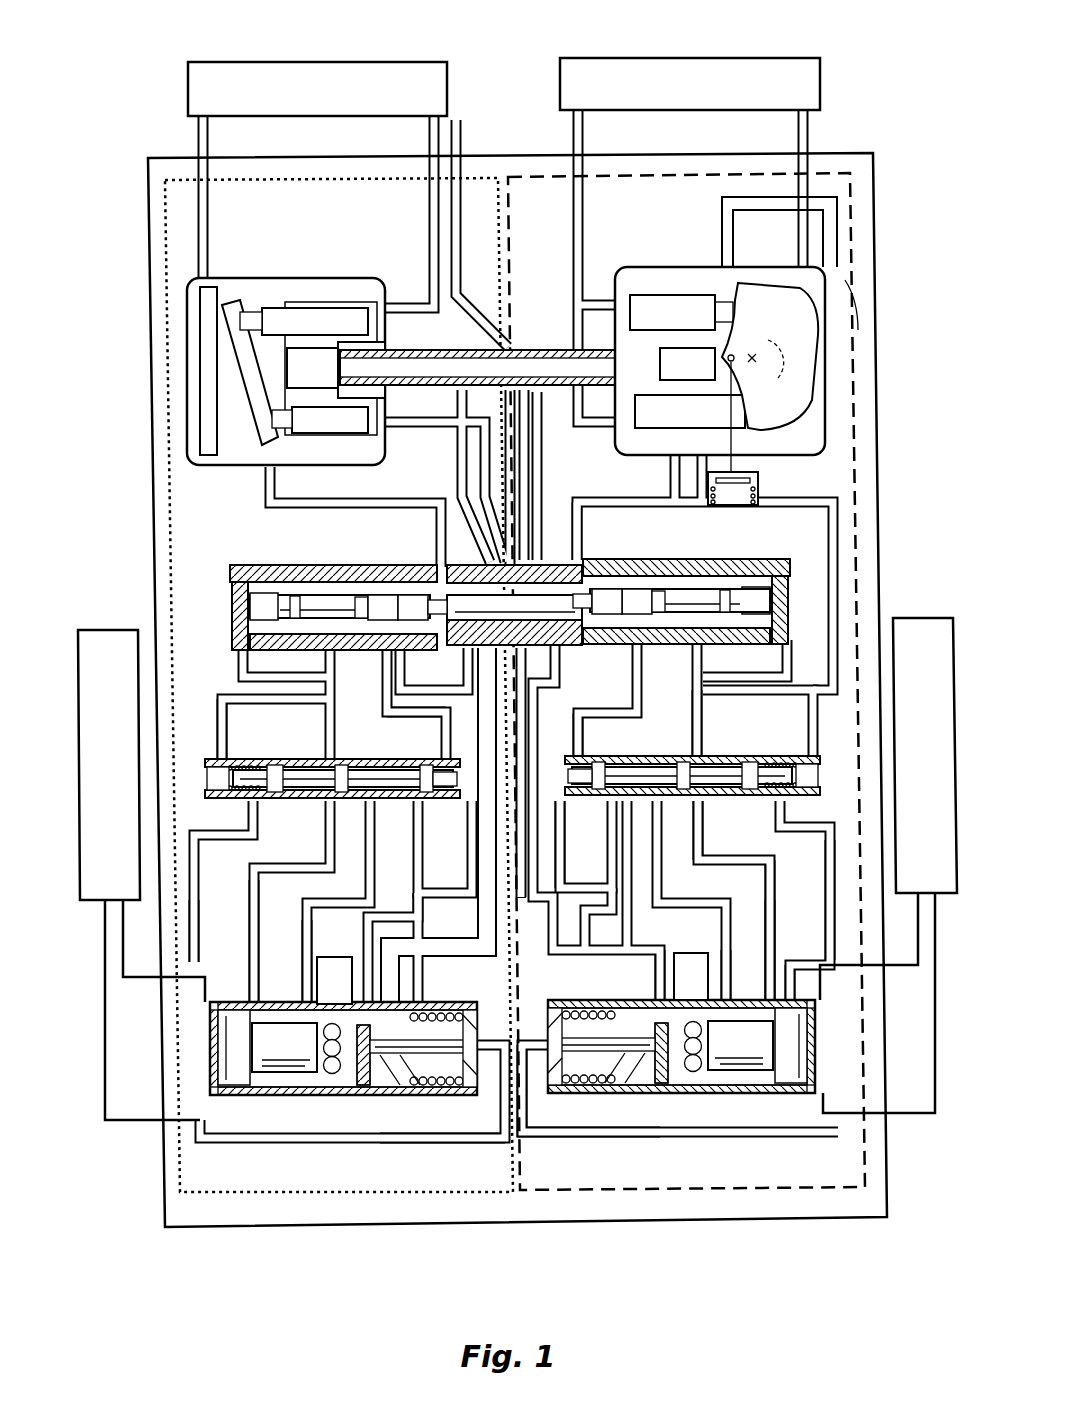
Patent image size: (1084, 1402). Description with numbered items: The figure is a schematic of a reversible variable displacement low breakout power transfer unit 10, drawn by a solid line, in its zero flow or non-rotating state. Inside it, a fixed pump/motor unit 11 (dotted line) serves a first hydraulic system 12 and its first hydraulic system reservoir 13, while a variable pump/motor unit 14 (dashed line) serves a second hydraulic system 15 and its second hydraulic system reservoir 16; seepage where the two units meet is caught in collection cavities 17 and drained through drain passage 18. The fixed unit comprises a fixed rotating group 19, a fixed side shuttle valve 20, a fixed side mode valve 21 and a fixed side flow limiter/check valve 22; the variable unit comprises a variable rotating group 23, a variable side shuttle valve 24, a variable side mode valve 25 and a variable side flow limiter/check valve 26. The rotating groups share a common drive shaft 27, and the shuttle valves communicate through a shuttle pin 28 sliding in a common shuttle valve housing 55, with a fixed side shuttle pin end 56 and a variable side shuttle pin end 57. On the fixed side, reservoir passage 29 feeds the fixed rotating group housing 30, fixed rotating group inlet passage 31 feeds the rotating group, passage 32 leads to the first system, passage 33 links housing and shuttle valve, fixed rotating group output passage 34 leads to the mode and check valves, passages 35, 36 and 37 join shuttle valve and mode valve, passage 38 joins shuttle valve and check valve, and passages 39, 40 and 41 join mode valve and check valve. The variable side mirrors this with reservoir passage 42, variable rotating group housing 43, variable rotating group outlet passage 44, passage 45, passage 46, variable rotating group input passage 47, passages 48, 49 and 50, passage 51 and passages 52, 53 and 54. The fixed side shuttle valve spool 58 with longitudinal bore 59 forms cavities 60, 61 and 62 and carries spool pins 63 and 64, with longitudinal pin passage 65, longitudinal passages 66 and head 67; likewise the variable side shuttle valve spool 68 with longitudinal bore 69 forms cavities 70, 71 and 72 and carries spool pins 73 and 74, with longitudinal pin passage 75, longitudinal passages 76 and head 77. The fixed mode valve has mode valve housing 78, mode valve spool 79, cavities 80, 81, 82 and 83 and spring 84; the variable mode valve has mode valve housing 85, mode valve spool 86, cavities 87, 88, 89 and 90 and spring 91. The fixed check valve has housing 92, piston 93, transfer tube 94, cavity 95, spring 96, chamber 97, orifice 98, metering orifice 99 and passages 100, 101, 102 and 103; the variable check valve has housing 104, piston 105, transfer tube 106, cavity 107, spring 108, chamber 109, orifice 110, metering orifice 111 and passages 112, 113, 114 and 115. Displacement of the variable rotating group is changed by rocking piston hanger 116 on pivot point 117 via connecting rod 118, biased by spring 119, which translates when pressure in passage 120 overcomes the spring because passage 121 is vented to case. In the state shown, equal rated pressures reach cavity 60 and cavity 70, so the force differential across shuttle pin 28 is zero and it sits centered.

The low breakout power transfer unit 10 is at (150, 266).
The fixed pump/motor unit 11 is at (165, 347).
The first hydraulic system 12 is at (102, 928).
The first hydraulic system reservoir 13 is at (288, 62).
The variable pump/motor unit 14 is at (858, 306).
The second hydraulic system 15 is at (905, 617).
The second hydraulic system reservoir 16 is at (690, 64).
The collection cavities 17 is at (533, 388).
The drain passage 18 is at (462, 128).
The fixed rotating group 19 is at (300, 274).
The fixed side shuttle valve 20 is at (230, 590).
The fixed side mode valve 21 is at (205, 774).
The fixed side flow limiter/check valve 22 is at (230, 1006).
The variable rotating group 23 is at (628, 284).
The variable side shuttle valve 24 is at (778, 615).
The variable side mode valve 25 is at (820, 757).
The variable side flow limiter/check valve 26 is at (832, 965).
The common drive shaft 27 is at (437, 398).
The shuttle pin 28 is at (470, 578).
The reservoir passage 29 is at (207, 130).
The fixed rotating group housing 30 is at (265, 286).
The fixed rotating group inlet passage 31 is at (427, 130).
The passage 32 is at (140, 1125).
The passage 33 is at (266, 487).
The fixed rotating group output passage 34 is at (457, 465).
The passage 35 is at (217, 695).
The passage 36 is at (322, 704).
The passage 37 is at (440, 722).
The passage 38 is at (480, 905).
The passage 39 is at (200, 855).
The passage 40 is at (290, 880).
The passage 41 is at (373, 830).
The reservoir passage 42 is at (797, 130).
The variable rotating group housing 43 is at (760, 268).
The variable rotating group outlet passage 44 is at (585, 130).
The passage 45 is at (910, 1120).
The passage 46 is at (655, 495).
The variable rotating group input passage 47 is at (532, 465).
The passage 48 is at (818, 720).
The passage 49 is at (703, 710).
The passage 50 is at (590, 735).
The passage 51 is at (526, 905).
The passage 52 is at (838, 850).
The passage 53 is at (785, 845).
The passage 54 is at (715, 878).
The common shuttle valve housing 55 is at (540, 643).
The fixed side shuttle pin end 56 is at (437, 598).
The variable side shuttle pin end 57 is at (518, 560).
The fixed side shuttle valve spool 58 is at (285, 598).
The longitudinal bore 59 is at (358, 597).
The cavity 60 is at (240, 645).
The cavity 61 is at (298, 596).
The cavity 62 is at (395, 648).
The spool pin 63 is at (230, 572).
The spool pin 64 is at (455, 645).
The longitudinal pin passage 65 is at (375, 595).
The longitudinal passages 66 is at (253, 594).
The head 67 is at (405, 595).
The variable side shuttle valve spool 68 is at (660, 590).
The longitudinal bore 69 is at (638, 590).
The cavity 70 is at (780, 602).
The cavity 71 is at (722, 643).
The cavity 72 is at (598, 643).
The spool pin 73 is at (720, 590).
The spool pin 74 is at (545, 520).
The longitudinal pin passage 75 is at (585, 560).
The longitudinal passages 76 is at (780, 572).
The head 77 is at (662, 643).
The mode valve housing 78 is at (455, 800).
The mode valve spool 79 is at (417, 900).
The cavity 80 is at (210, 798).
The cavity 81 is at (300, 805).
The cavity 82 is at (375, 758).
The cavity 83 is at (455, 893).
The spring 84 is at (234, 767).
The mode valve housing 85 is at (605, 810).
The mode valve spool 86 is at (605, 908).
The cavity 87 is at (825, 795).
The cavity 88 is at (710, 805).
The cavity 89 is at (690, 810).
The cavity 90 is at (610, 880).
The spring 91 is at (780, 762).
The housing 92 is at (250, 965).
The piston 93 is at (290, 985).
The transfer tube 94 is at (470, 1018).
The cavity 95 is at (452, 1008).
The spring 96 is at (422, 1008).
The chamber 97 is at (320, 1062).
The orifice 98 is at (250, 1075).
The metering orifice 99 is at (335, 1003).
The passage 100 is at (280, 1142).
The passage 101 is at (370, 960).
The passage 102 is at (385, 1142).
The passage 103 is at (392, 1094).
The housing 104 is at (776, 940).
The piston 105 is at (732, 990).
The transfer tube 106 is at (553, 1010).
The cavity 107 is at (588, 1092).
The spring 108 is at (615, 1085).
The chamber 109 is at (710, 1062).
The orifice 110 is at (780, 1070).
The metering orifice 111 is at (693, 1000).
The passage 112 is at (785, 995).
The passage 113 is at (666, 948).
The passage 114 is at (700, 1137).
The passage 115 is at (650, 1137).
The piston hanger 116 is at (862, 262).
The pivot point 117 is at (802, 300).
The connecting rod 118 is at (720, 255).
The spring 119 is at (760, 494).
The passage 120 is at (720, 206).
The passage 121 is at (708, 465).